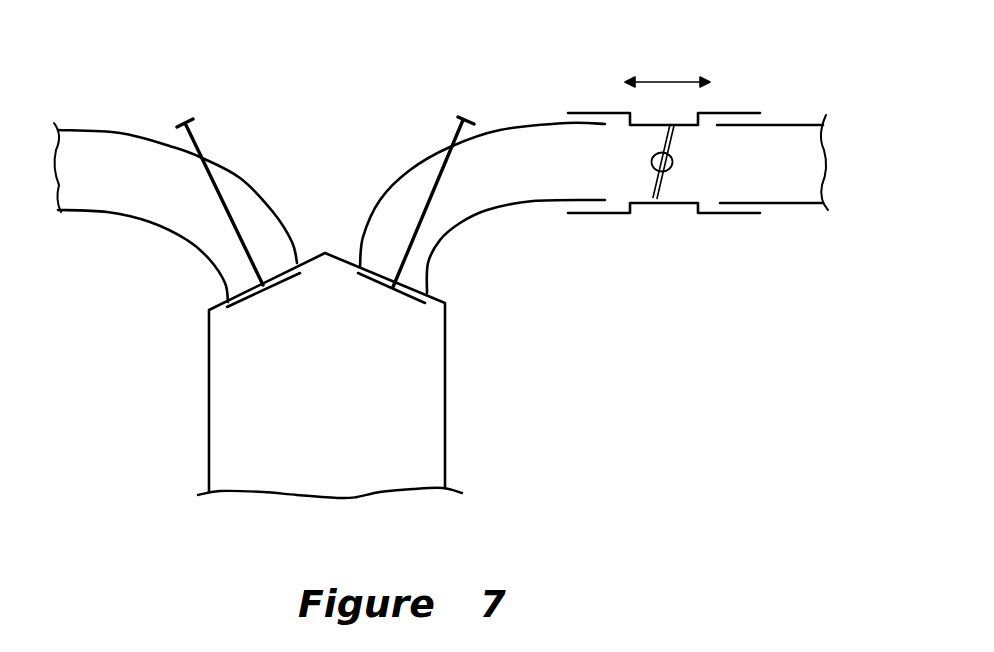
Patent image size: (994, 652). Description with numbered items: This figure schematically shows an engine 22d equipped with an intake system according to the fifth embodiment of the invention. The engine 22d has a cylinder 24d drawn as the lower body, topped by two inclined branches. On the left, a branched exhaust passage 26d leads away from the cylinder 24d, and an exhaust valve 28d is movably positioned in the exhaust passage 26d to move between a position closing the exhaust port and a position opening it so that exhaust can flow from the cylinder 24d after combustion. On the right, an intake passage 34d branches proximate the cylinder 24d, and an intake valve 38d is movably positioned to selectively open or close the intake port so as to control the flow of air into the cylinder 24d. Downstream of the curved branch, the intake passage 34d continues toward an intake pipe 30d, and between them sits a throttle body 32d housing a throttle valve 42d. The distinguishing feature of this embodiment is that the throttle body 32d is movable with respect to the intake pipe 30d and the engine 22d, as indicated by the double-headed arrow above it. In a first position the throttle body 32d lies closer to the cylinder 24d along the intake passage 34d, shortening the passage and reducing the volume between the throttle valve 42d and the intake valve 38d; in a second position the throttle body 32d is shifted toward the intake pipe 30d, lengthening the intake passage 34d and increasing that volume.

The engine 22d is at (513, 353).
The cylinder 24d is at (445, 412).
The exhaust passage 26d is at (117, 130).
The exhaust valve 28d is at (225, 213).
The intake pipe 30d is at (803, 205).
The throttle body 32d is at (720, 213).
The intake passage 34d is at (390, 204).
The intake valve 38d is at (423, 215).
The throttle valve 42d is at (680, 208).